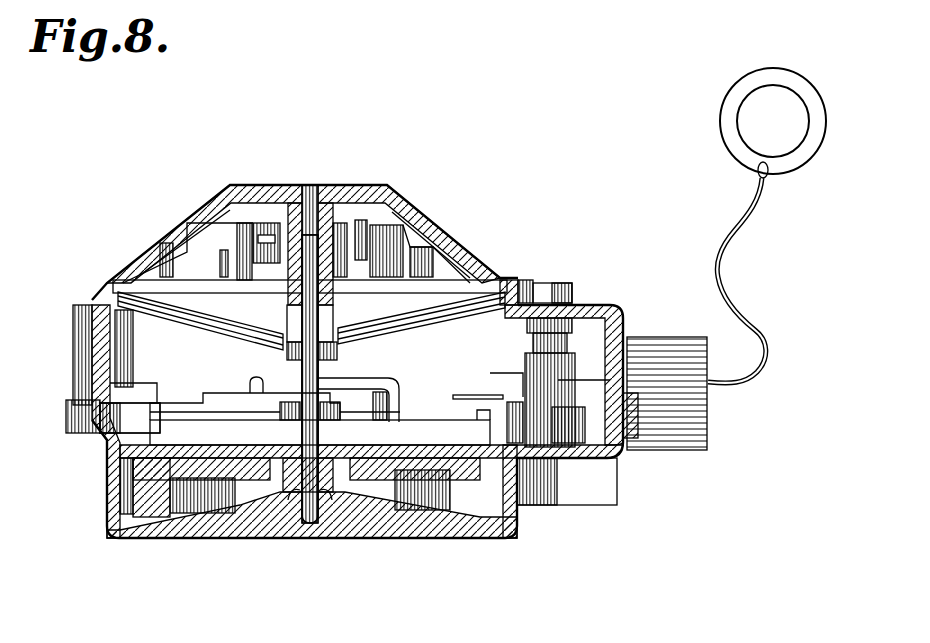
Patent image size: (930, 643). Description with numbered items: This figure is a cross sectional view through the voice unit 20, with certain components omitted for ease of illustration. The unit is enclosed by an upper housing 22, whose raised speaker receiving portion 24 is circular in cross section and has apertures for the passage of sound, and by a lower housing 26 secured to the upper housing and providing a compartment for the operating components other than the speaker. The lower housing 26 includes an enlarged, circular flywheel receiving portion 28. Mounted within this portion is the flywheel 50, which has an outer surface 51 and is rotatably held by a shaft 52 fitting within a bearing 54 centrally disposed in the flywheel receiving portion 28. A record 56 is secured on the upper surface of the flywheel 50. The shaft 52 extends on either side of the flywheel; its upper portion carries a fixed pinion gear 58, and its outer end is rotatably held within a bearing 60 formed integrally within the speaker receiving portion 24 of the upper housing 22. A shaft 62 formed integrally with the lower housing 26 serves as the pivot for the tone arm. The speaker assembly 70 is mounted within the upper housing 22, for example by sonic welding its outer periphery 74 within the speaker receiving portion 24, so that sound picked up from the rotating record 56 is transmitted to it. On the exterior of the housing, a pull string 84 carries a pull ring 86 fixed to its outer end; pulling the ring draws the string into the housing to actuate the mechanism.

The voice unit 20 is at (355, 171).
The upper housing 22 is at (565, 280).
The speaker receiving portion 24 is at (427, 213).
The lower housing 26 is at (624, 461).
The flywheel receiving portion 28 is at (510, 538).
The flywheel 50 is at (147, 483).
The outer surface 51 is at (133, 503).
The shaft 52 is at (352, 538).
The bearing 54 is at (283, 538).
The record 56 is at (413, 437).
The pinion gear 58 is at (330, 412).
The bearing 60 is at (285, 292).
The shaft 62 is at (127, 343).
The speaker assembly 70 is at (233, 340).
The outer periphery 74 is at (507, 277).
The pull string 84 is at (723, 283).
The pull ring 86 is at (720, 127).